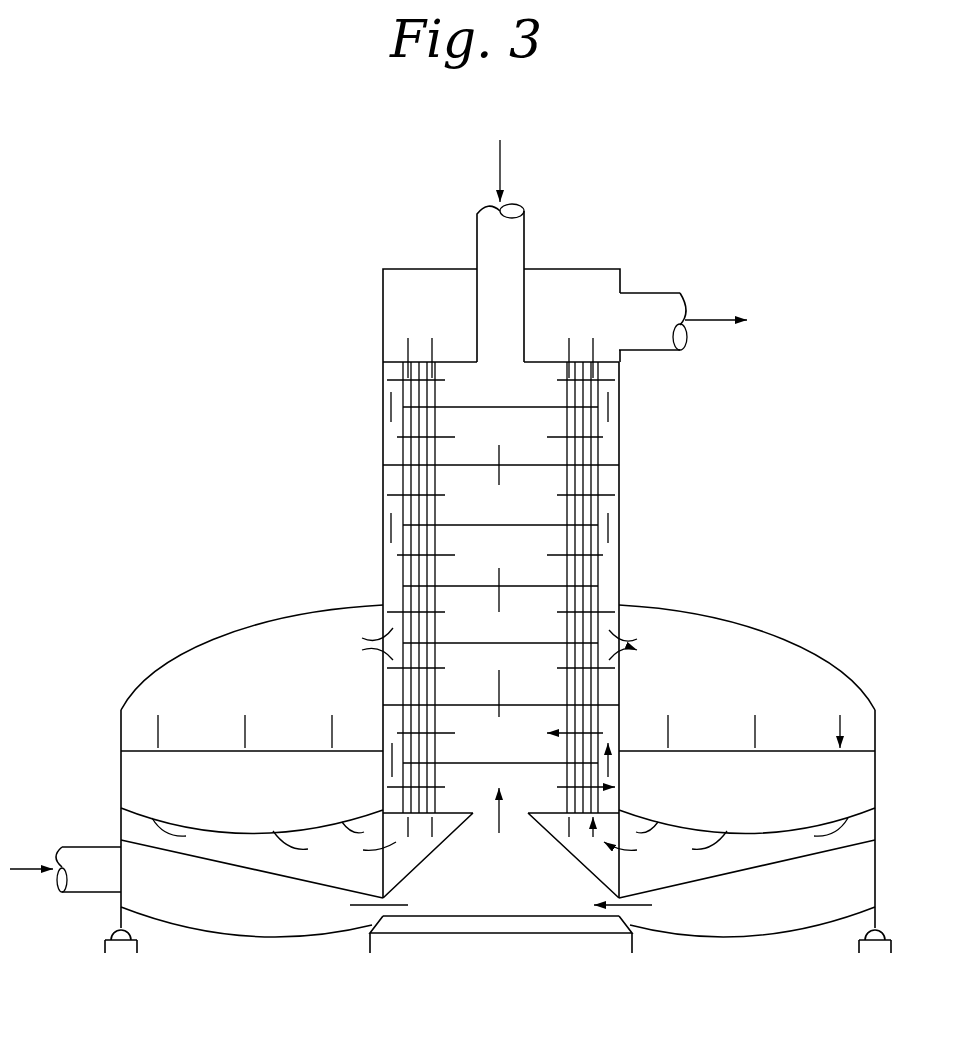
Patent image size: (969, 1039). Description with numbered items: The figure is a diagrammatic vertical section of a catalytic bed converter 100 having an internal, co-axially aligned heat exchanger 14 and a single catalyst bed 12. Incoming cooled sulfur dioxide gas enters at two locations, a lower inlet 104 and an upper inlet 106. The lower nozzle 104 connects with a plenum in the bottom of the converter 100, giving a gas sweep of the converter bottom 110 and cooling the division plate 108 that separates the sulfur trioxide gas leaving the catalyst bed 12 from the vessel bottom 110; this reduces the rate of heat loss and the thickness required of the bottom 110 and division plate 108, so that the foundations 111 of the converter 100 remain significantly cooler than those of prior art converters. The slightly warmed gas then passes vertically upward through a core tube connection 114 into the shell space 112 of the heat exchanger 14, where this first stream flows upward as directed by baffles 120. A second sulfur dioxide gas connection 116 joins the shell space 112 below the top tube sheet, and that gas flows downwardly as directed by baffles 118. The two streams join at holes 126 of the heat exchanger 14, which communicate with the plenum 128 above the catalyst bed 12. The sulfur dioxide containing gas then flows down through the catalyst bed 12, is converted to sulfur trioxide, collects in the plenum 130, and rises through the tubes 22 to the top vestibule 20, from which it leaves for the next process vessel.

The catalyst bed 12 is at (218, 779).
The heat exchanger 14 is at (619, 492).
The top vestibule 20 is at (430, 310).
The tubes 22 is at (565, 505).
The converter 100 is at (277, 612).
The lower inlet 104 is at (78, 843).
The upper inlet 106 is at (524, 238).
The division plate 108 is at (232, 857).
The converter bottom 110 is at (299, 937).
The foundations 111 is at (135, 945).
The shell space 112 is at (517, 390).
The core tube connection 114 is at (477, 817).
The second sulfur dioxide gas connection 116 is at (524, 313).
The baffles 118 is at (563, 465).
The baffles 120 is at (480, 763).
The holes 126 is at (358, 640).
The plenum 128 is at (237, 672).
The plenum 130 is at (318, 828).